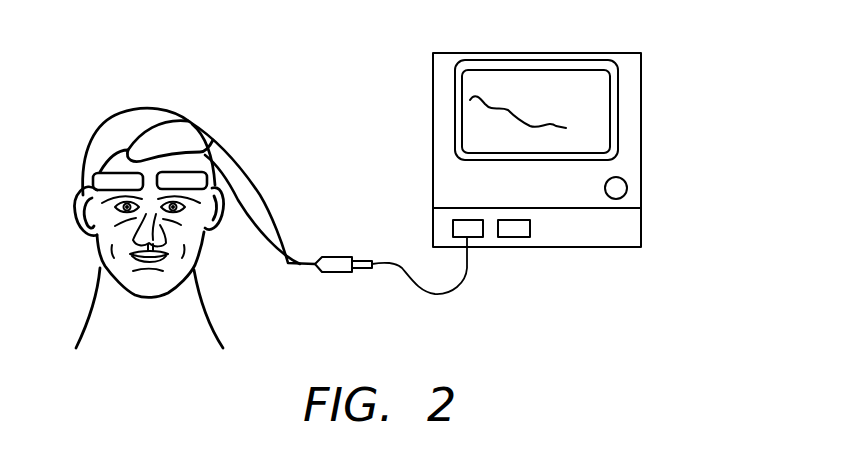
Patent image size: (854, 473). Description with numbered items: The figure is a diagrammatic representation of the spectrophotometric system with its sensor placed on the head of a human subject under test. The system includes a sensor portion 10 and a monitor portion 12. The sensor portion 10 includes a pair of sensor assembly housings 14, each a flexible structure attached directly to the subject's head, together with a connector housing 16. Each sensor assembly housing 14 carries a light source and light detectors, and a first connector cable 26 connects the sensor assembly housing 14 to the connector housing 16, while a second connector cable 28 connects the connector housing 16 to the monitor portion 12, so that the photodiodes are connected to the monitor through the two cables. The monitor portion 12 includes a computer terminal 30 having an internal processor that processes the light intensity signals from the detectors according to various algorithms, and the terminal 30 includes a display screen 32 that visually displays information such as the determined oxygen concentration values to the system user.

The sensor portion 10 is at (211, 113).
The monitor portion 12 is at (646, 50).
The sensor assembly housing 14 is at (100, 170).
The connector housing 16 is at (335, 273).
The first connector cable 26 is at (243, 202).
The second connector cable 28 is at (462, 282).
The computer terminal 30 is at (647, 135).
The display screen 32 is at (489, 78).